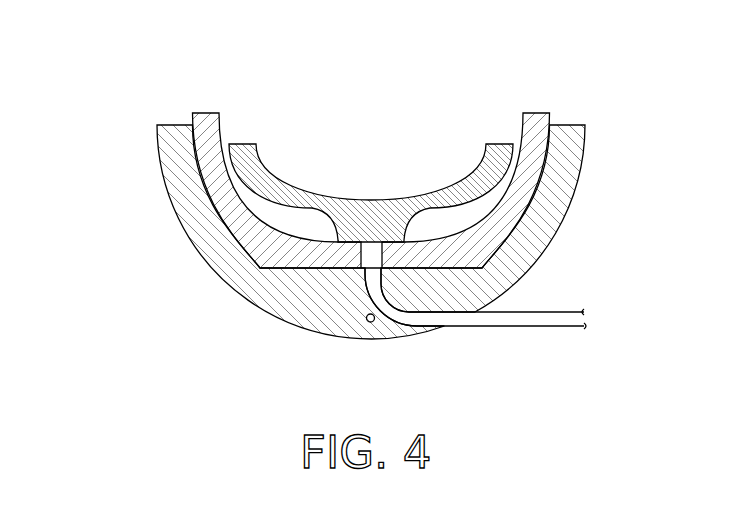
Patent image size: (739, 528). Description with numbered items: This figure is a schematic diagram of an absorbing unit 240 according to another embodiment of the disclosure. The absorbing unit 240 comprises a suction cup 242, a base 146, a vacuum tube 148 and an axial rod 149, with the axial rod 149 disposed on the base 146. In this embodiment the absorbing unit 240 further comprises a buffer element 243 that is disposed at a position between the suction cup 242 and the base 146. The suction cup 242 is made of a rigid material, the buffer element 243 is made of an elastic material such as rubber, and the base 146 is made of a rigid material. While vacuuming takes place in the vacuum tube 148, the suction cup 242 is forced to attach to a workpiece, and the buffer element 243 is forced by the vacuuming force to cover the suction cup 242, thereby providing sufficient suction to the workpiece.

The absorbing unit 240 is at (67, 91).
The suction cup 242 is at (493, 156).
The buffer element 243 is at (533, 126).
The base 146 is at (567, 150).
The vacuum tube 148 is at (528, 320).
The axial rod 149 is at (367, 322).